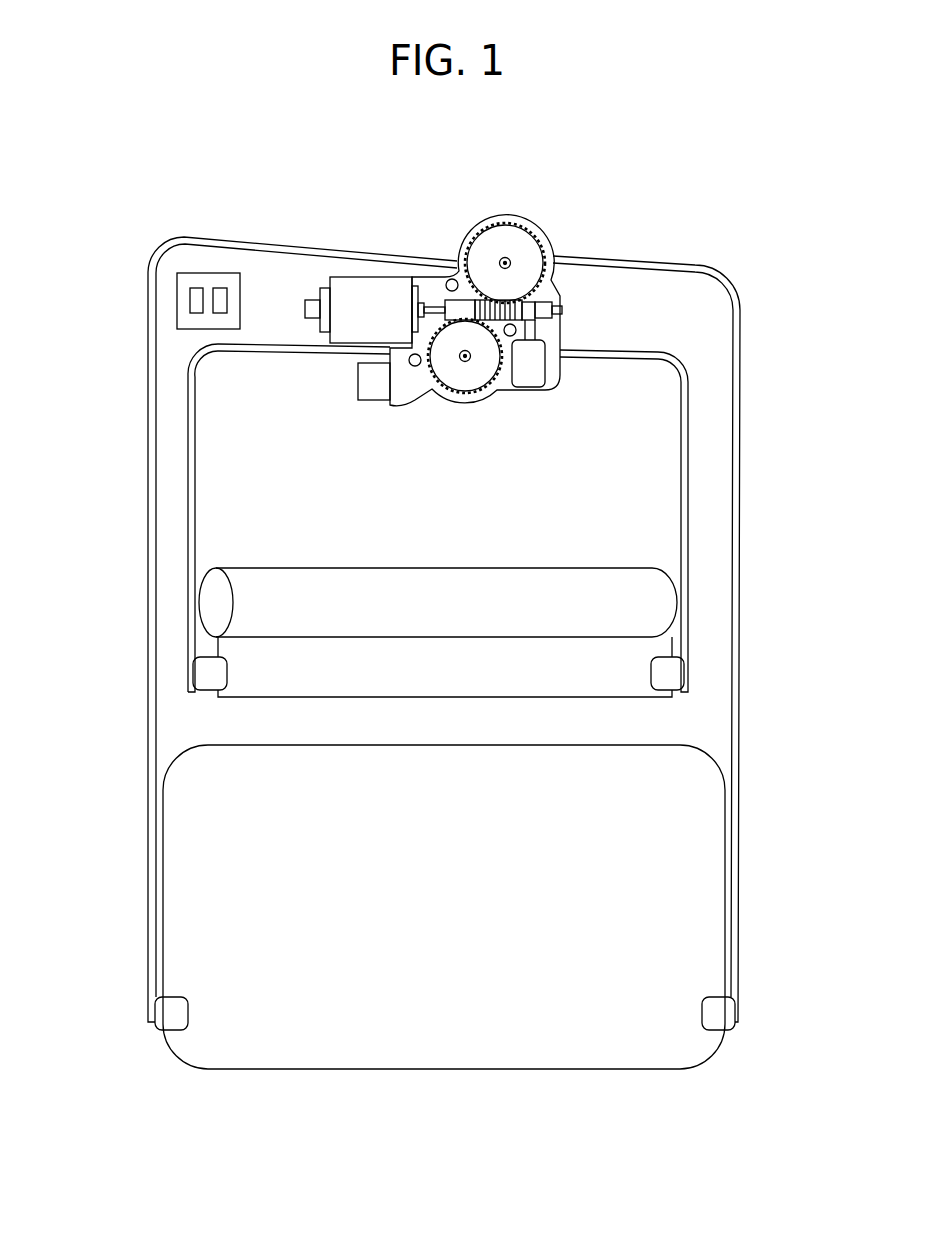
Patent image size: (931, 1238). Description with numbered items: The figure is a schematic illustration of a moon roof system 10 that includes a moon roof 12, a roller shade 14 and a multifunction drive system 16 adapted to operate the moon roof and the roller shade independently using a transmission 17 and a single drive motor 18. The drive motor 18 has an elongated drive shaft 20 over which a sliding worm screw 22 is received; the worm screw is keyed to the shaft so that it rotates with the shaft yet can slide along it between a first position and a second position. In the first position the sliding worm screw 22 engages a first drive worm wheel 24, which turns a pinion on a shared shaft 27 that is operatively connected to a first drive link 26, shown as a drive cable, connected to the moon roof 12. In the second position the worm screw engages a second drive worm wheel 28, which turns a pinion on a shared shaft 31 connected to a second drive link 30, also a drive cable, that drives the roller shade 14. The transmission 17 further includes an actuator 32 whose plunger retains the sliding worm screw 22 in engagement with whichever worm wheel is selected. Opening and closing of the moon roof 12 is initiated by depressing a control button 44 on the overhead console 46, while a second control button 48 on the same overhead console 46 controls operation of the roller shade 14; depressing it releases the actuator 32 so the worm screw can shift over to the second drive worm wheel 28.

The moon roof system 10 is at (724, 233).
The moon roof 12 is at (423, 1015).
The roller shade 14 is at (638, 583).
The multifunction drive system 16 is at (398, 248).
The transmission 17 is at (547, 331).
The single drive motor 18 is at (347, 323).
The elongated drive shaft 20 is at (433, 303).
The sliding worm screw 22 is at (522, 300).
The first drive worm wheel 24 is at (505, 233).
The first drive link 26 is at (150, 428).
The shared shaft 27 is at (510, 258).
The second drive worm wheel 28 is at (470, 378).
The second drive link 30 is at (193, 500).
The shared shaft 31 is at (459, 362).
The actuator 32 is at (532, 372).
The control button 44 is at (197, 293).
The overhead console 46 is at (177, 308).
The control button 48 is at (220, 293).